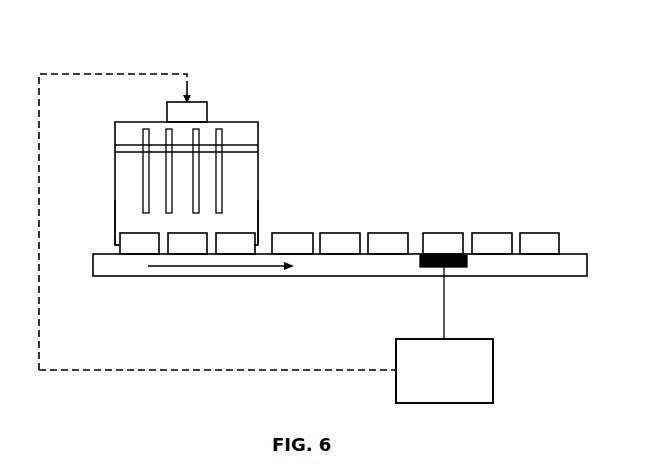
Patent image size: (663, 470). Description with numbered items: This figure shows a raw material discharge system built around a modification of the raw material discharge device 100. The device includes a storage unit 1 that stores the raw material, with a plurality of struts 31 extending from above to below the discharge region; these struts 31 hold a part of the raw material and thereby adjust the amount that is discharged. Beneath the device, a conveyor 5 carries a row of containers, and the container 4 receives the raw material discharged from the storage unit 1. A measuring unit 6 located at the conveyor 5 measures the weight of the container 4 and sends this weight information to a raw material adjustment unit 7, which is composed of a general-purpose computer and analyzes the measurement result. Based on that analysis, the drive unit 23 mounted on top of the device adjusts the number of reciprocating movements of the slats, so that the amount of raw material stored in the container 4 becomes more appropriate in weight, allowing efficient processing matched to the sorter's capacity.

The raw material discharge device 100 is at (259, 120).
The drive unit 23 is at (201, 106).
The struts 31 is at (221, 181).
The storage unit 1 is at (243, 217).
The container 4 is at (443, 243).
The conveyor 5 is at (570, 263).
The measuring unit 6 is at (465, 268).
The raw material adjustment unit 7 is at (444, 335).